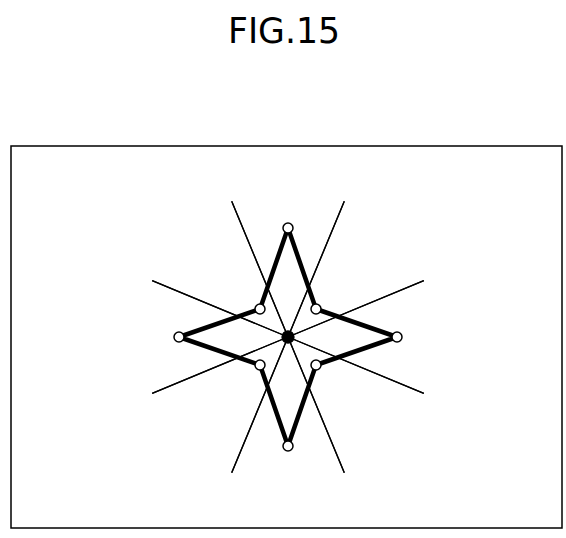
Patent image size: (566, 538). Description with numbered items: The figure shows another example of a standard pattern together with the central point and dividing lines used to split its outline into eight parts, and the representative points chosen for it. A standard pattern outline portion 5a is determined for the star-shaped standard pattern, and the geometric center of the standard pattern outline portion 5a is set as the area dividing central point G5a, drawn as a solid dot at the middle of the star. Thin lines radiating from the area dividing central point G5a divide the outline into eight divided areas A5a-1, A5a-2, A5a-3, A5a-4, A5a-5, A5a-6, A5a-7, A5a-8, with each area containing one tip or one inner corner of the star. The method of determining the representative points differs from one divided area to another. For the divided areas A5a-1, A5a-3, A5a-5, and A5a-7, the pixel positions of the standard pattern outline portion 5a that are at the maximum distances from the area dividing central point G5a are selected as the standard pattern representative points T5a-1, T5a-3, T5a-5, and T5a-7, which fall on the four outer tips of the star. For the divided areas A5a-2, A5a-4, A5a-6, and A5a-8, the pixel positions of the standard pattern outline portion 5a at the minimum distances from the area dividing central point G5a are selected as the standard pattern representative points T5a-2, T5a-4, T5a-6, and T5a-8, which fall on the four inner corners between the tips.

The standard pattern outline portion 5a is at (288, 337).
The area dividing central point G5a is at (288, 337).
The standard pattern representative point T5a-1 is at (285, 225).
The standard pattern representative point T5a-2 is at (320, 305).
The standard pattern representative point T5a-3 is at (401, 341).
The standard pattern representative point T5a-4 is at (320, 370).
The standard pattern representative point T5a-5 is at (290, 451).
The standard pattern representative point T5a-6 is at (256, 370).
The standard pattern representative point T5a-7 is at (175, 341).
The standard pattern representative point T5a-8 is at (256, 305).
The divided area A5a-1 is at (288, 246).
The divided area A5a-2 is at (363, 269).
The divided area A5a-3 is at (390, 337).
The divided area A5a-4 is at (362, 405).
The divided area A5a-5 is at (288, 430).
The divided area A5a-6 is at (213, 405).
The divided area A5a-7 is at (194, 337).
The divided area A5a-8 is at (218, 269).